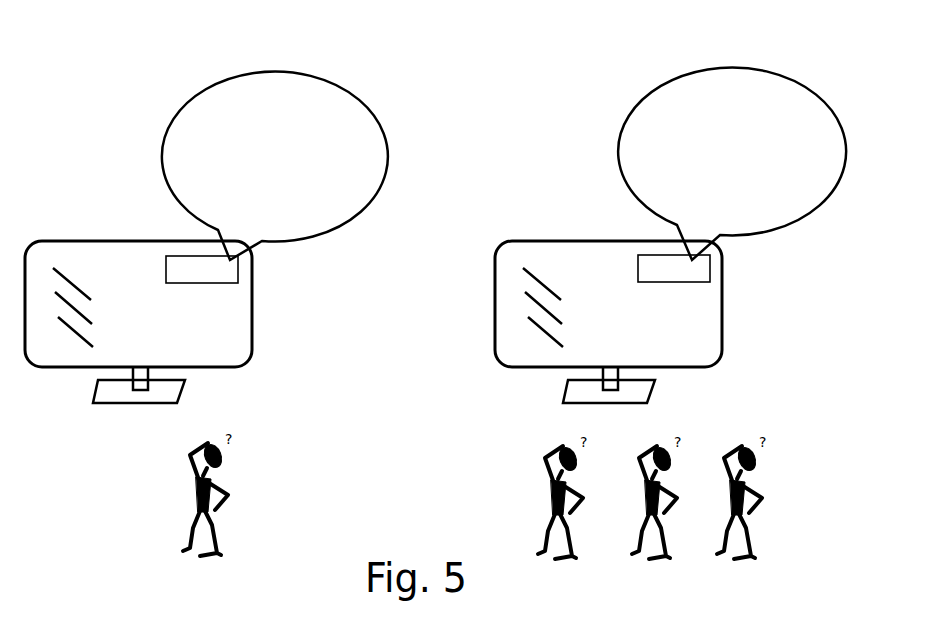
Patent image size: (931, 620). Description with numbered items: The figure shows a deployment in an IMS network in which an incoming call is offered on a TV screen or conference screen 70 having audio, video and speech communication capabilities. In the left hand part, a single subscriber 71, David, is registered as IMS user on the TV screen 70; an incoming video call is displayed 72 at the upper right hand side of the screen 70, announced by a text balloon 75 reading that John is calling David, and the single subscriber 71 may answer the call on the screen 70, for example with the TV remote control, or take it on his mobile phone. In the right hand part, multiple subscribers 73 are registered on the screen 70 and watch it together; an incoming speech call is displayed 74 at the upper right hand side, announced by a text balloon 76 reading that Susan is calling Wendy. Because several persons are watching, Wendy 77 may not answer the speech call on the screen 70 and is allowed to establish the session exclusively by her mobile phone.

The screen 70 is at (67, 241).
The single subscriber 71 is at (172, 494).
The displayed incoming video call 72 is at (228, 267).
The multiple subscribers 73 is at (615, 471).
The displayed incoming speech call 74 is at (705, 268).
The text balloon 75 is at (277, 72).
The text balloon 76 is at (740, 68).
The Wendy 77 is at (752, 447).